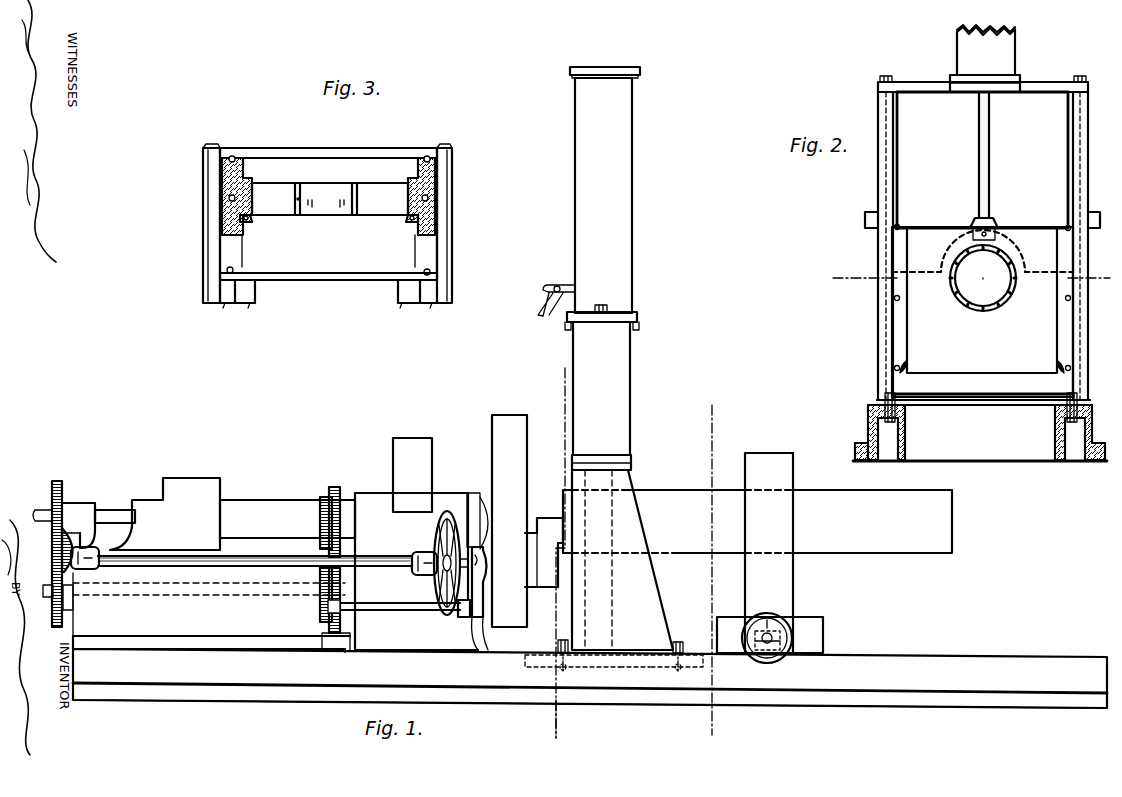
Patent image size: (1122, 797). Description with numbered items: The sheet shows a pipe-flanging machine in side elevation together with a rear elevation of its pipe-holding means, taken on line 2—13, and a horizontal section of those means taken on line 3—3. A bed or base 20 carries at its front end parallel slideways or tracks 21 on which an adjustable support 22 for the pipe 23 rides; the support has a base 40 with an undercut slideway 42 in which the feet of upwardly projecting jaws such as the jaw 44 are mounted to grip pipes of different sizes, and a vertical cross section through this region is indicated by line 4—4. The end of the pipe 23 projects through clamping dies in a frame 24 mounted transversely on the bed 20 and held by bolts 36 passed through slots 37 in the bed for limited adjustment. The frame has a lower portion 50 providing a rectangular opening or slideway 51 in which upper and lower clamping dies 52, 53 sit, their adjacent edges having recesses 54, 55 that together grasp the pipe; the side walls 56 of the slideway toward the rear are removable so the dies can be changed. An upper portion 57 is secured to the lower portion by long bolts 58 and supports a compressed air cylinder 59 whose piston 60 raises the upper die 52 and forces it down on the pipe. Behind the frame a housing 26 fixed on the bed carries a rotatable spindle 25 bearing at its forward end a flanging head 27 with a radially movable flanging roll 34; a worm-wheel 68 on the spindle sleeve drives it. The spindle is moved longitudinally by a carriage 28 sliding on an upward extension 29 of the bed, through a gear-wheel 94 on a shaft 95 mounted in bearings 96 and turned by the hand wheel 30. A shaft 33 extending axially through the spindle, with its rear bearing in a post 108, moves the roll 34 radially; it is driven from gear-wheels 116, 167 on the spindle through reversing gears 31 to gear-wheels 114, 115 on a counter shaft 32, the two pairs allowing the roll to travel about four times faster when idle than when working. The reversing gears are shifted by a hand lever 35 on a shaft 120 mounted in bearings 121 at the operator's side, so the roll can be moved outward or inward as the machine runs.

In FIG. 1, the bed 20 is at (590, 672).
In FIG. 1, the slideways 21 is at (1006, 656).
In FIG. 2, the slideways 21 is at (869, 426).
In FIG. 3, the slideways 21 is at (442, 286).
In FIG. 1, the adjustable support 22 is at (804, 553).
In FIG. 1, the pipe 23 is at (905, 548).
In FIG. 2, the pipe 23 is at (959, 306).
In FIG. 1, the frame 24 is at (631, 438).
In FIG. 2, the frame 24 is at (970, 316).
In FIG. 3, the frame 24 is at (328, 204).
In FIG. 1, the spindle 25 is at (259, 501).
In FIG. 1, the housing 26 is at (421, 571).
In FIG. 1, the flanging head 27 is at (492, 421).
In FIG. 1, the carriage 28 is at (165, 514).
In FIG. 1, the upward extension 29 is at (209, 604).
In FIG. 1, the hand wheel 30 is at (440, 596).
In FIG. 1, the reversing gears 31 is at (346, 573).
In FIG. 1, the counter shaft 32 is at (233, 598).
In FIG. 1, the shaft 33 is at (114, 510).
In FIG. 1, the flanging roll 34 is at (552, 518).
In FIG. 1, the hand lever 35 is at (487, 561).
In FIG. 1, the bolts 36 is at (685, 638).
In FIG. 2, the bolts 36 is at (897, 424).
In FIG. 1, the slots 37 is at (633, 668).
In FIG. 3, the slots 37 is at (242, 305).
In FIG. 1, the base 40 is at (823, 634).
In FIG. 1, the undercut slideway 42 is at (800, 629).
In FIG. 1, the jaw 44 is at (769, 553).
In FIG. 1, the lower portion 50 is at (622, 560).
In FIG. 2, the slideway 51 is at (897, 331).
In FIG. 3, the slideway 51 is at (436, 191).
In FIG. 2, the upper clamping die 52 is at (1010, 244).
In FIG. 2, the lower clamping die 53 is at (982, 300).
In FIG. 3, the lower clamping die 53 is at (283, 216).
In FIG. 2, the recess 54 is at (983, 278).
In FIG. 2, the recess 55 is at (983, 278).
In FIG. 3, the recess 55 is at (335, 186).
In FIG. 3, the side walls 56 is at (240, 226).
In FIG. 1, the upper portion 57 is at (617, 368).
In FIG. 2, the upper portion 57 is at (898, 154).
In FIG. 1, the long bolts 58 is at (608, 308).
In FIG. 2, the long bolts 58 is at (883, 76).
In FIG. 1, the compressed air cylinder 59 is at (605, 190).
In FIG. 2, the compressed air cylinder 59 is at (1010, 46).
In FIG. 2, the piston 60 is at (990, 160).
In FIG. 1, the worm-wheel 68 is at (393, 470).
In FIG. 1, the gear-wheel 94 is at (60, 547).
In FIG. 1, the shaft 95 is at (150, 561).
In FIG. 1, the bearings 96 is at (90, 571).
In FIG. 1, the post 108 is at (76, 504).
In FIG. 1, the gear-wheel 114 is at (320, 623).
In FIG. 1, the gear-wheel 115 is at (334, 636).
In FIG. 1, the gear-wheel 116 is at (322, 492).
In FIG. 1, the shaft 120 is at (400, 619).
In FIG. 1, the bearings 121 is at (463, 618).
In FIG. 1, the gear-wheel 167 is at (336, 487).
In FIG. 1, the section line 2— 13 is at (559, 546).
In FIG. 1, the section line 2—13 2 is at (552, 731).
In FIG. 2, the section line 3— 3 is at (967, 280).
In FIG. 1, the section line 4— 4 is at (707, 573).